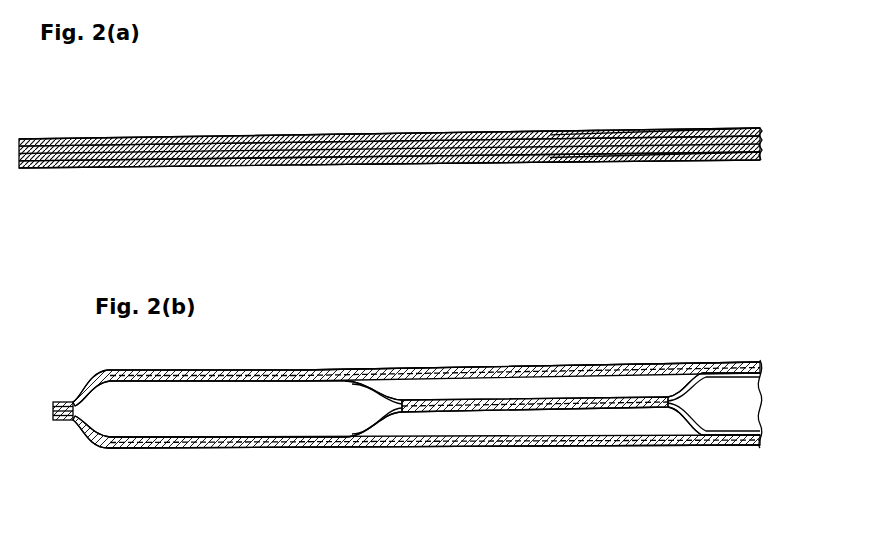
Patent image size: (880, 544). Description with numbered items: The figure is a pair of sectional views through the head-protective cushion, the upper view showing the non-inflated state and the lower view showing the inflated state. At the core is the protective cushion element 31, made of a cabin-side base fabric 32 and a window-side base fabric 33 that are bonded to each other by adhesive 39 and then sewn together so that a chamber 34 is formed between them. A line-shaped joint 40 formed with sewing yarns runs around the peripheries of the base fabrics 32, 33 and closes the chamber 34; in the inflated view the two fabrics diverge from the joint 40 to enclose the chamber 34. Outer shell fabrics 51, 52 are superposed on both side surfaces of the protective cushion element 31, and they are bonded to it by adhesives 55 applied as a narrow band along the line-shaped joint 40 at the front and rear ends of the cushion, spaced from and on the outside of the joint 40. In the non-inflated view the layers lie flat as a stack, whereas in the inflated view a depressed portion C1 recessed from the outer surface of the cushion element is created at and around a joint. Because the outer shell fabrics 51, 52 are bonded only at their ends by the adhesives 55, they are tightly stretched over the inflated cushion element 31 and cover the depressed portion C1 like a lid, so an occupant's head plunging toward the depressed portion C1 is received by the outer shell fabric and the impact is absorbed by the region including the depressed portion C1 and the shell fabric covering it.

In FIG. 2B, the protective cushion element 31 is at (174, 432).
In FIG. 2A, the cabin-side base fabric 32 is at (616, 160).
In FIG. 2B, the cabin-side base fabric 32 is at (281, 431).
In FIG. 2A, the window-side base fabric 33 is at (620, 129).
In FIG. 2B, the window-side base fabric 33 is at (318, 381).
In FIG. 2B, the chamber 34 is at (233, 419).
In FIG. 2A, the adhesive 39 is at (372, 133).
In FIG. 2A, the line-shaped joint 40 is at (60, 170).
In FIG. 2B, the line-shaped joint 40 is at (80, 407).
In FIG. 2A, the outer shell fabric 51 is at (488, 165).
In FIG. 2B, the outer shell fabric 51 is at (661, 449).
In FIG. 2A, the outer shell fabric 52 is at (490, 131).
In FIG. 2B, the outer shell fabric 52 is at (524, 366).
In FIG. 2A, the adhesives 55 is at (38, 136).
In FIG. 2B, the depressed portion C1 is at (441, 424).